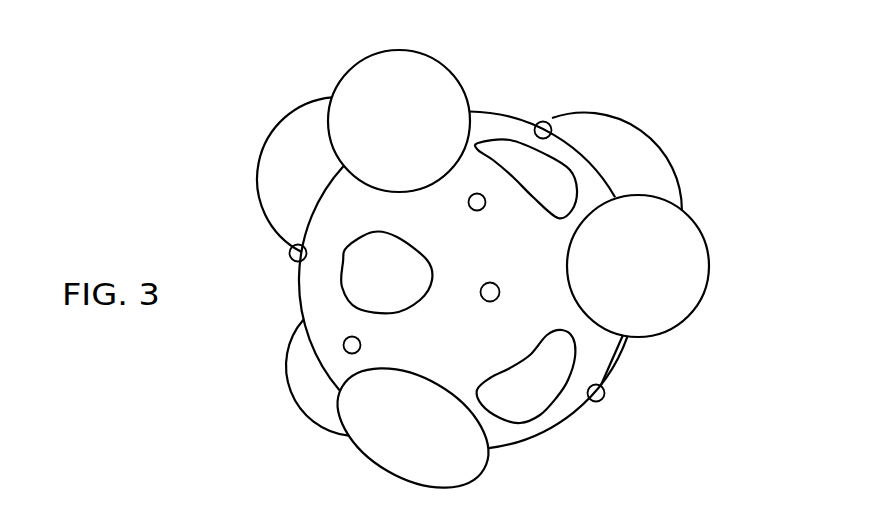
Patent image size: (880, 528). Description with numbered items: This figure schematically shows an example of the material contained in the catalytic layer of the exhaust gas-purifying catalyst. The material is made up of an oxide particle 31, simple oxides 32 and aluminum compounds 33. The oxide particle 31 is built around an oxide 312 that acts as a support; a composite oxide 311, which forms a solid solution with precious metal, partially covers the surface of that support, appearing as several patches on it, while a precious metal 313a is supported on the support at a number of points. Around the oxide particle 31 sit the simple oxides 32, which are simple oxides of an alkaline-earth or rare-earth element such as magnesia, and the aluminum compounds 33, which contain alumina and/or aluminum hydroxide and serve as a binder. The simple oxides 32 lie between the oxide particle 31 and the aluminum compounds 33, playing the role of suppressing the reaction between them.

The oxide particle 31 is at (491, 111).
The simple oxide 32 is at (372, 70).
The aluminum compound 33 is at (295, 143).
The composite oxide 311 is at (370, 278).
The oxide 312 is at (607, 355).
The precious metal 313a is at (477, 193).